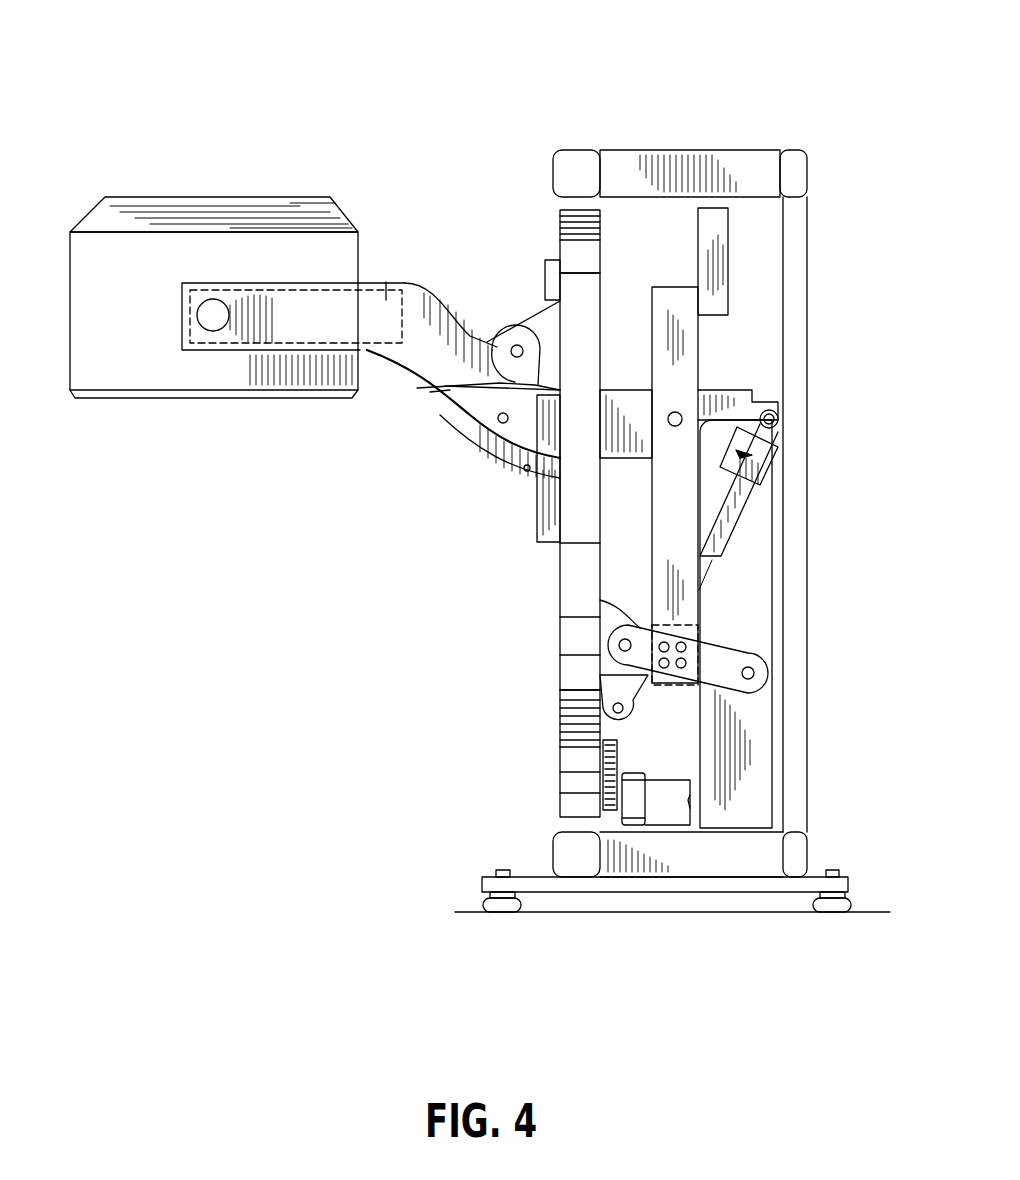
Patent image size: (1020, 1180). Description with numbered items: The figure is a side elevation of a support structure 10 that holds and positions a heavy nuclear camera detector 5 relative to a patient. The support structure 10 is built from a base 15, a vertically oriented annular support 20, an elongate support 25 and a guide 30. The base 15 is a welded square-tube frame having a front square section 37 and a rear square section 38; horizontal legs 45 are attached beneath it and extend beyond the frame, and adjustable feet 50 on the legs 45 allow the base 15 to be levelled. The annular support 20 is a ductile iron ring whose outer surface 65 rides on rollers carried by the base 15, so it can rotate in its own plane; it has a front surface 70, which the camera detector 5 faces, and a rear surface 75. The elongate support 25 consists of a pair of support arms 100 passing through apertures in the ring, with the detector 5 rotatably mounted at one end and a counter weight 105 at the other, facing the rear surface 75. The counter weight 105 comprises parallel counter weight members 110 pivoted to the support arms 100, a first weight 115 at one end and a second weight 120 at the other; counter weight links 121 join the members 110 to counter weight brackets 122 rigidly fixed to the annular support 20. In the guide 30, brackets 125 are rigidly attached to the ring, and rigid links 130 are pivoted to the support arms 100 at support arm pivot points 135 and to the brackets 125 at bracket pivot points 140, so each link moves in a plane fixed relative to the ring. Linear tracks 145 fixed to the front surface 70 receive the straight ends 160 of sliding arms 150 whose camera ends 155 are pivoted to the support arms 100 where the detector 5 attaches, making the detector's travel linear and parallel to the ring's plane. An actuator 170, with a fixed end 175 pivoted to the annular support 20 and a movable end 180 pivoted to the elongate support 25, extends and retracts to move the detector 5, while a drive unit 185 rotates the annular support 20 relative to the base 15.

The nuclear camera detector 5 is at (145, 360).
The support structure 10 is at (783, 118).
The base 15 is at (793, 585).
The annular support 20 is at (570, 578).
The elongate support 25 is at (470, 406).
The guide 30 is at (497, 478).
The front square section 37 is at (580, 165).
The rear square section 38 is at (795, 175).
The horizontal legs 45 is at (598, 885).
The feet 50 is at (500, 905).
The outer surface 65 is at (590, 338).
The front surface 70 is at (557, 690).
The rear surface 75 is at (600, 237).
The support arms 100 is at (410, 290).
The counter weight 105 is at (712, 368).
The counter weight members 110 is at (700, 495).
The first weight 115 is at (710, 265).
The second weight 120 is at (718, 789).
The counter weight links 121 is at (770, 673).
The counter weight bracket 122 is at (600, 618).
The brackets 125 is at (517, 345).
The rigid links 130 is at (445, 290).
The support arm pivot points 135 is at (499, 424).
The bracket pivot points 140 is at (450, 390).
The linear tracks 145 is at (545, 527).
The sliding arms 150 is at (392, 282).
The camera end 155 is at (200, 347).
The straight end 160 is at (548, 295).
The actuator 170 is at (760, 460).
The fixed end 175 is at (600, 715).
The movable end 180 is at (772, 418).
The drive unit 185 is at (664, 800).